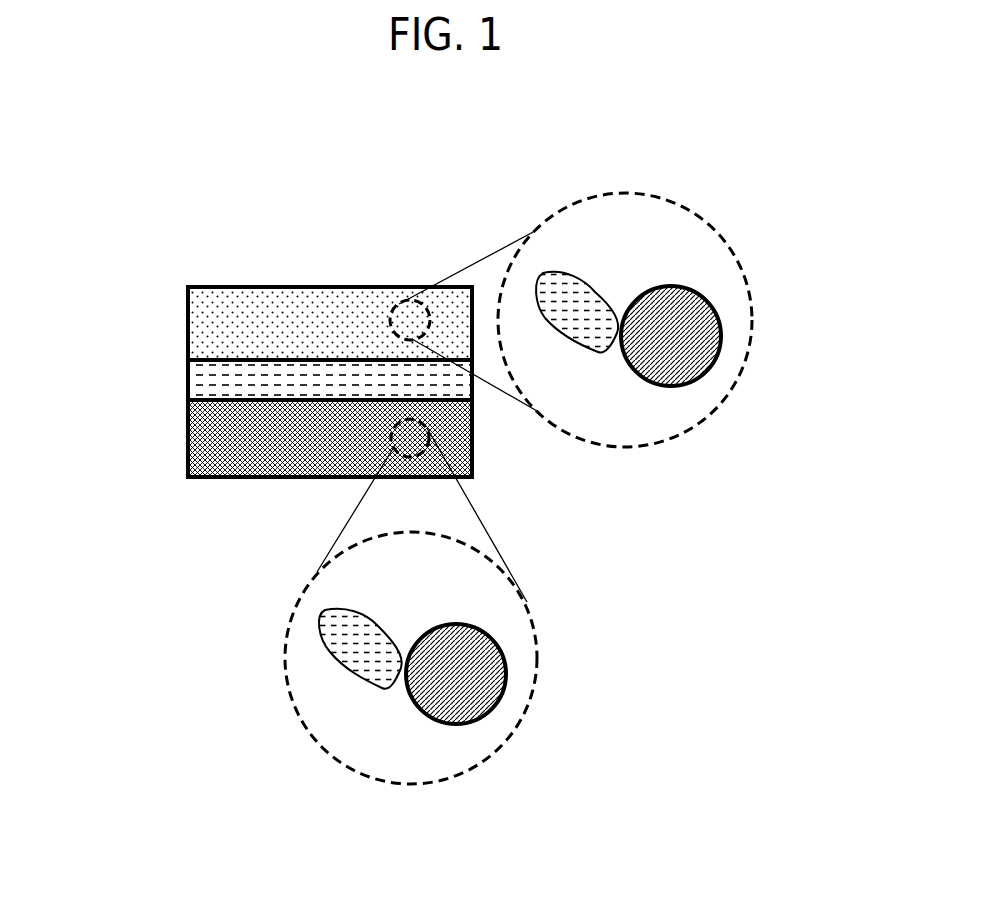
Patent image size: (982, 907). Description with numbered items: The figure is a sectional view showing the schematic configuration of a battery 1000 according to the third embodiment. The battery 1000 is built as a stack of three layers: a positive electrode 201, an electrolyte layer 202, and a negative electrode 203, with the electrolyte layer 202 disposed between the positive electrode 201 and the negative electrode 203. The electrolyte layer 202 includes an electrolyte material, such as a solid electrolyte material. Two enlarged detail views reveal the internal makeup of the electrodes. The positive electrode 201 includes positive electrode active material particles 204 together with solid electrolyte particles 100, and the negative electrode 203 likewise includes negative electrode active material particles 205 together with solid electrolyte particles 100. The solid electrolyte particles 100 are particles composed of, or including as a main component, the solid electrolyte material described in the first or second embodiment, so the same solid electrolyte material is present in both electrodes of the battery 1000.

The battery 1000 is at (368, 235).
The positive electrode 201 is at (228, 307).
The electrolyte layer 202 is at (227, 380).
The negative electrode 203 is at (225, 437).
The positive electrode active material particles 204 is at (690, 337).
The negative electrode active material particles 205 is at (470, 668).
The solid electrolyte particles 100 is at (593, 327).